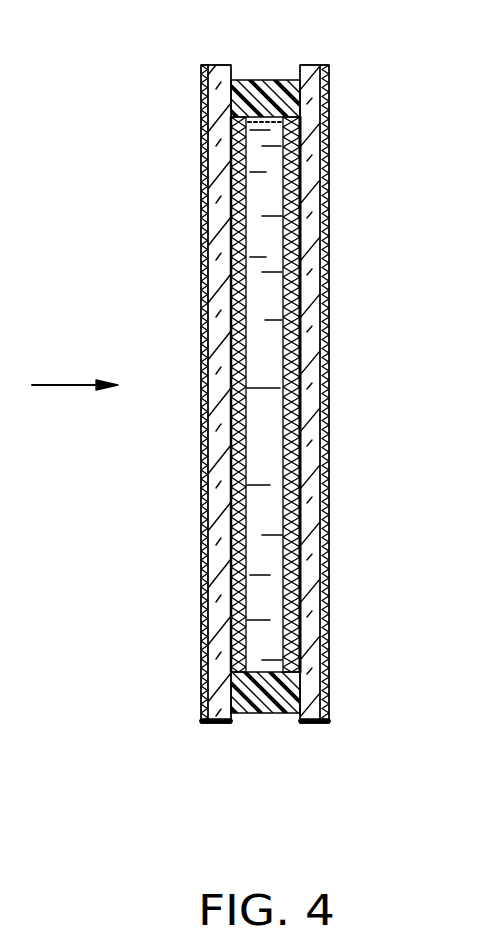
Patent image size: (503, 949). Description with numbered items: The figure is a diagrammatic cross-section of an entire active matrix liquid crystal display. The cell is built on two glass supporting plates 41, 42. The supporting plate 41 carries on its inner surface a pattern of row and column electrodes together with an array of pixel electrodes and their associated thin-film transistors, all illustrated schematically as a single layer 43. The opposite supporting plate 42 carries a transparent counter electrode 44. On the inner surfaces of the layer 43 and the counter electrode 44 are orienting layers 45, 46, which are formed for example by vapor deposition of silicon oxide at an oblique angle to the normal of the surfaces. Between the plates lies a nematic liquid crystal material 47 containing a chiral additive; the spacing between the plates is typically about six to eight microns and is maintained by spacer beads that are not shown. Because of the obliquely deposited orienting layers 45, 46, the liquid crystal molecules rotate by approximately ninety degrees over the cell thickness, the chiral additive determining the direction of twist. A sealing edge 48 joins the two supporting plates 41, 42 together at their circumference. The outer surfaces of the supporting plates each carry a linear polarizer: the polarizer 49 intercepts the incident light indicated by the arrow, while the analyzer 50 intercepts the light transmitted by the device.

The glass supporting plate 41 is at (306, 720).
The glass supporting plate 42 is at (220, 718).
The layer of row and column electrodes, pixel electrodes and TFTs 43 is at (297, 152).
The transparent counter electrode 44 is at (210, 246).
The orienting layer 45 is at (326, 207).
The orienting layer 46 is at (204, 313).
The nematic liquid crystal material 47 is at (283, 440).
The sealing edge 48 is at (260, 83).
The polarizer 49 is at (205, 153).
The analyzer 50 is at (327, 320).